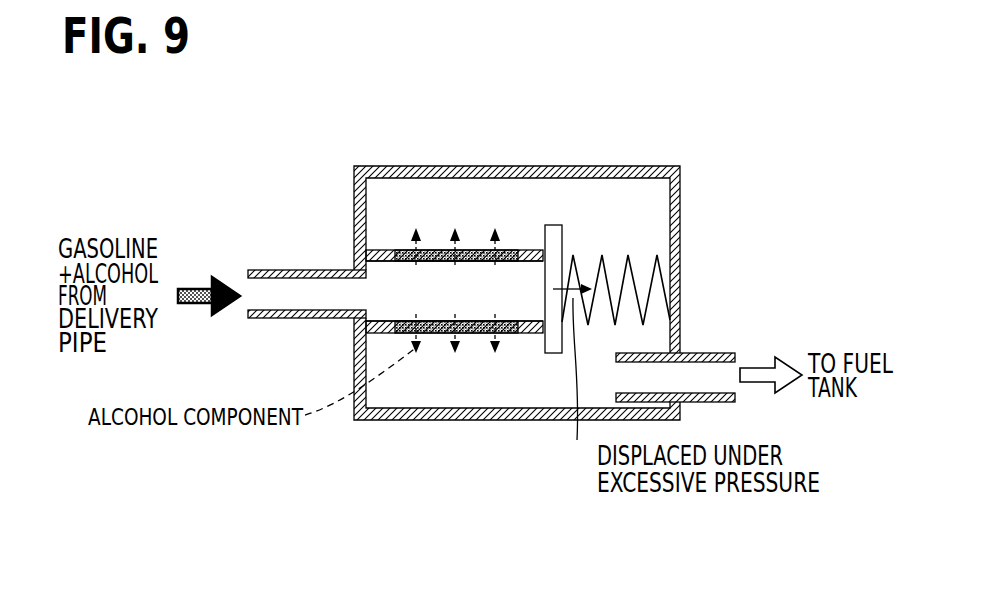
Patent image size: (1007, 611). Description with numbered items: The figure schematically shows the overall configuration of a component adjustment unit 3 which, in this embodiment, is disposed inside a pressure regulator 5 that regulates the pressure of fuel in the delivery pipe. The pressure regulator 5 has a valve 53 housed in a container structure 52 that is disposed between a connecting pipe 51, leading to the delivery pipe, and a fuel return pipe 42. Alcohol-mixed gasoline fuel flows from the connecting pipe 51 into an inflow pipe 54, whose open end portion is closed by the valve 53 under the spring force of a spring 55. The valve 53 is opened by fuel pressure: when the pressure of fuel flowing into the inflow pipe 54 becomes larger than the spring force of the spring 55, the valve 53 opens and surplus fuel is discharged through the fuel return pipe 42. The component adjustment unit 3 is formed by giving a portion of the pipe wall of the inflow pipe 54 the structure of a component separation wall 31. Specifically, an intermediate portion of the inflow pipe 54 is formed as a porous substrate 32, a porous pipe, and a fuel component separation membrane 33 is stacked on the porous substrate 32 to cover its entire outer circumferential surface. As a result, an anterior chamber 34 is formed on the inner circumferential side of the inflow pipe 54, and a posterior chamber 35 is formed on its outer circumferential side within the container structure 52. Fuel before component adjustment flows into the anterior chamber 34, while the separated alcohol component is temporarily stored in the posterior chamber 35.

The component adjustment unit 3 is at (352, 427).
The pressure regulator 5 is at (588, 195).
The component separation wall 31 is at (493, 475).
The porous substrate 32 is at (445, 323).
The fuel component separation membrane 33 is at (445, 323).
The anterior chamber 34 is at (390, 273).
The posterior chamber 35 is at (455, 195).
The fuel return pipe 42 is at (710, 352).
The connecting pipe 51 is at (321, 266).
The container structure 52 is at (680, 196).
The valve 53 is at (545, 225).
The inflow pipe 54 is at (355, 343).
The spring 55 is at (606, 272).